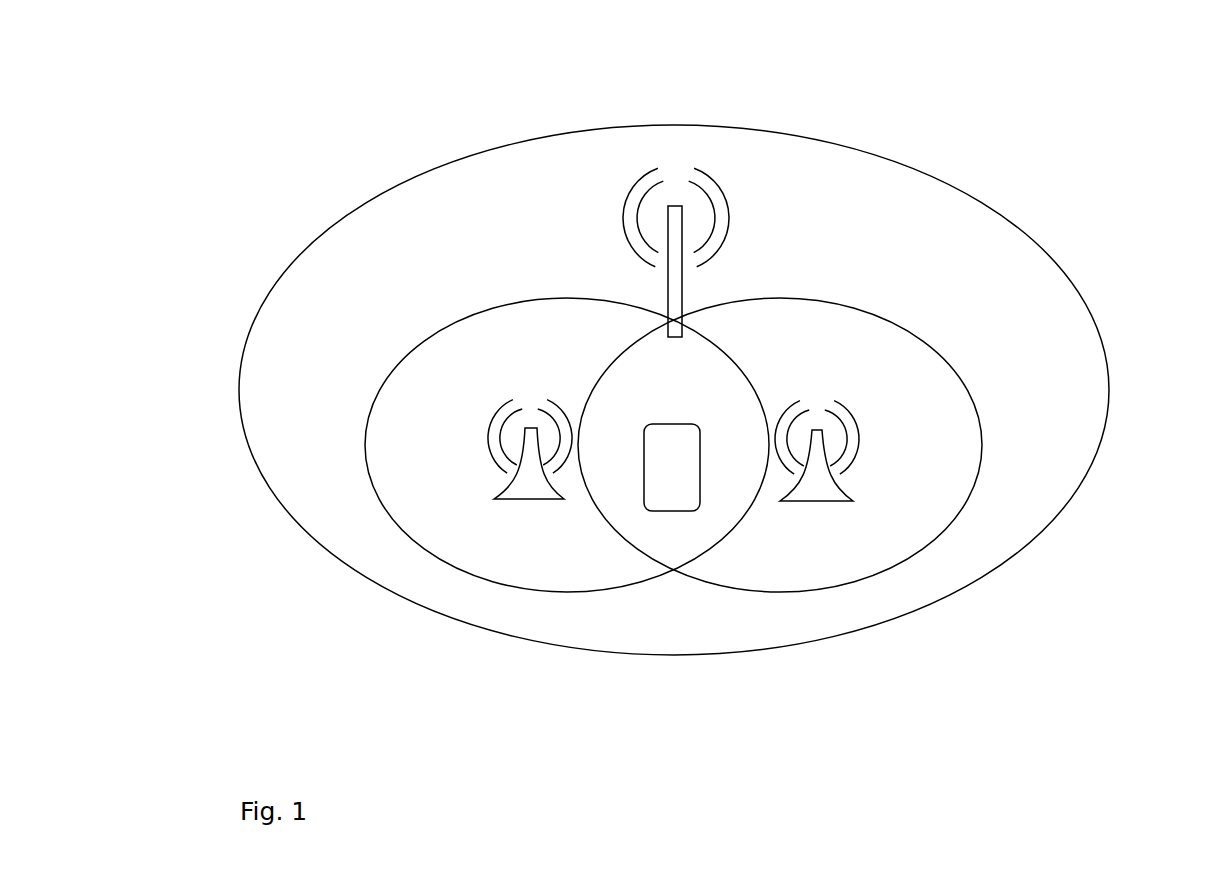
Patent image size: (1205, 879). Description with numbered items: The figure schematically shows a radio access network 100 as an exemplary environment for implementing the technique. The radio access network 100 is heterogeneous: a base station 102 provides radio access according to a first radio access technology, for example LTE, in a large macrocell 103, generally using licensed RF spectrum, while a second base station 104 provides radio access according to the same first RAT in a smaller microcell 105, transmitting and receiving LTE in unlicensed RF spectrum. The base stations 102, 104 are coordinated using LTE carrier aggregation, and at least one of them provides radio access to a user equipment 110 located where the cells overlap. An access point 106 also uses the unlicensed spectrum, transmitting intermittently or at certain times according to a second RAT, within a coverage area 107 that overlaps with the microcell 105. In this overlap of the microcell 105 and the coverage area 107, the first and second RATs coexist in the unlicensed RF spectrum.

The radio access network 100 is at (262, 152).
The base station 102 is at (715, 175).
The macrocell 103 is at (880, 240).
The base station 104 is at (818, 501).
The microcell 105 is at (948, 445).
The access point 106 is at (497, 487).
The coverage area 107 is at (495, 543).
The user equipment 110 is at (670, 484).